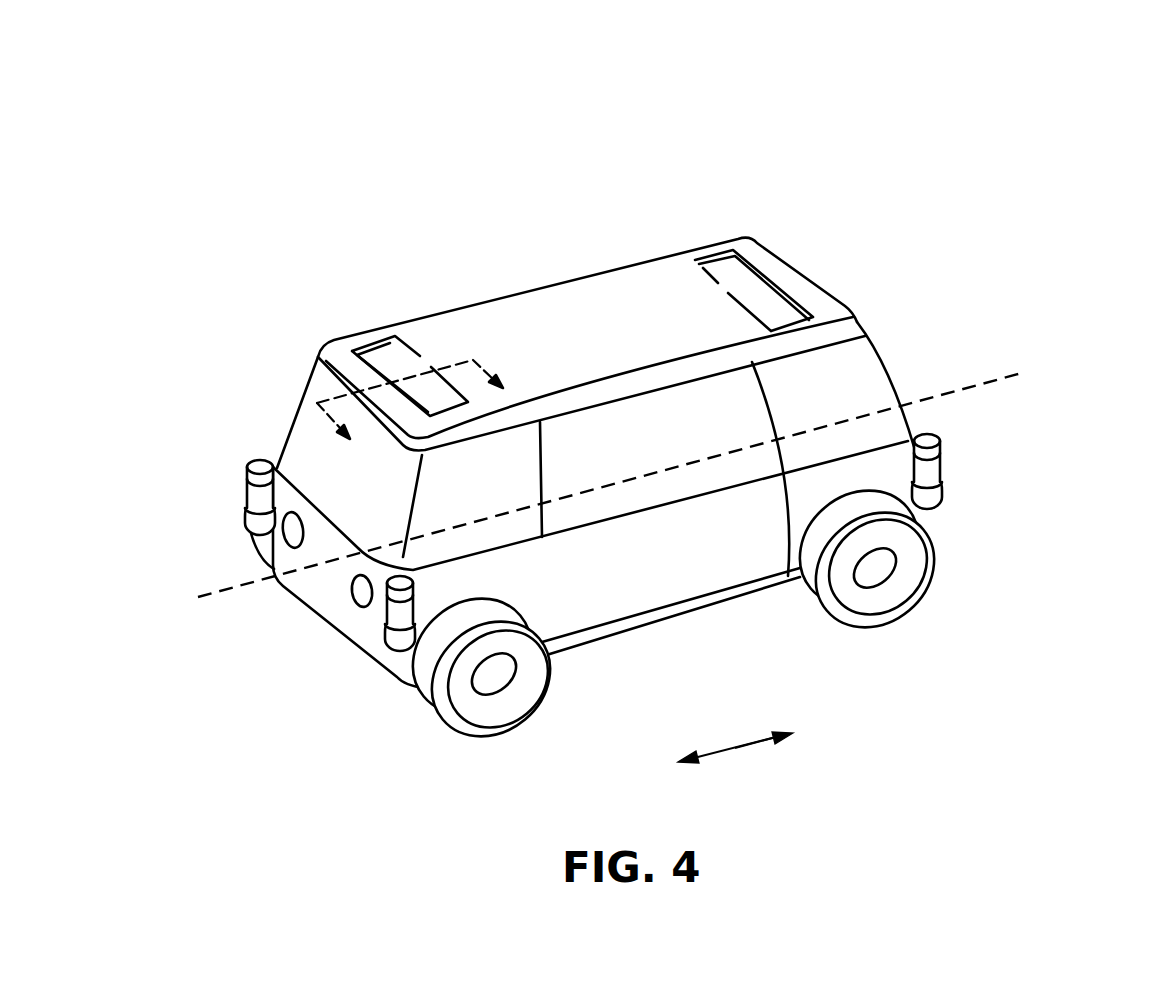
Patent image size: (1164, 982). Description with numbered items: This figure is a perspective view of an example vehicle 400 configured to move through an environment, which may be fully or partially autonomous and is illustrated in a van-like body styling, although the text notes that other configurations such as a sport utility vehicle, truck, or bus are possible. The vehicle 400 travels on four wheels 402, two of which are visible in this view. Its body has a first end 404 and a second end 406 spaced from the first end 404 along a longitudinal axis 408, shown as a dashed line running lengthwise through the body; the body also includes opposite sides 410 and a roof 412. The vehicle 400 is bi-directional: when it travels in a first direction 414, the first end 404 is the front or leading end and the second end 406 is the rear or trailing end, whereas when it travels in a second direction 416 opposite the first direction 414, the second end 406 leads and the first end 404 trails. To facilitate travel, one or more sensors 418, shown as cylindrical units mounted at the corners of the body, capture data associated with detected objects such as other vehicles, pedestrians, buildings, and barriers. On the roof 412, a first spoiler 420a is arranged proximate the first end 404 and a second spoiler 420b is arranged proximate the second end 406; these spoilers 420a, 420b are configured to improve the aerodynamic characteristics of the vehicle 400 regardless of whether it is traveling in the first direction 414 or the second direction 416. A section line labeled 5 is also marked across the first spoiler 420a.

The vehicle 400 is at (620, 428).
The wheels 402 is at (443, 731).
The first end 404 is at (270, 622).
The second end 406 is at (927, 353).
The longitudinal axis 408 is at (967, 388).
The opposite sides 410 is at (672, 567).
The roof 412 is at (628, 343).
The first direction 414 is at (705, 768).
The second direction 416 is at (794, 726).
The sensors 418 is at (245, 502).
The first spoiler 420a is at (347, 320).
The second spoiler 420b is at (670, 227).
The section line 5- 5 is at (402, 394).